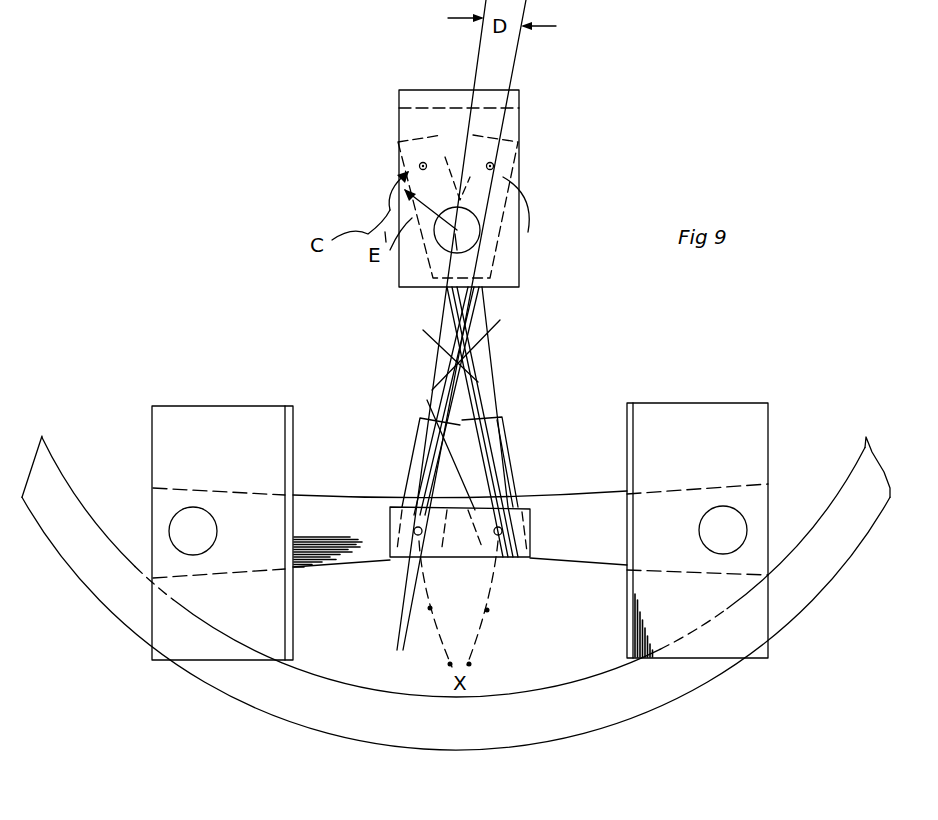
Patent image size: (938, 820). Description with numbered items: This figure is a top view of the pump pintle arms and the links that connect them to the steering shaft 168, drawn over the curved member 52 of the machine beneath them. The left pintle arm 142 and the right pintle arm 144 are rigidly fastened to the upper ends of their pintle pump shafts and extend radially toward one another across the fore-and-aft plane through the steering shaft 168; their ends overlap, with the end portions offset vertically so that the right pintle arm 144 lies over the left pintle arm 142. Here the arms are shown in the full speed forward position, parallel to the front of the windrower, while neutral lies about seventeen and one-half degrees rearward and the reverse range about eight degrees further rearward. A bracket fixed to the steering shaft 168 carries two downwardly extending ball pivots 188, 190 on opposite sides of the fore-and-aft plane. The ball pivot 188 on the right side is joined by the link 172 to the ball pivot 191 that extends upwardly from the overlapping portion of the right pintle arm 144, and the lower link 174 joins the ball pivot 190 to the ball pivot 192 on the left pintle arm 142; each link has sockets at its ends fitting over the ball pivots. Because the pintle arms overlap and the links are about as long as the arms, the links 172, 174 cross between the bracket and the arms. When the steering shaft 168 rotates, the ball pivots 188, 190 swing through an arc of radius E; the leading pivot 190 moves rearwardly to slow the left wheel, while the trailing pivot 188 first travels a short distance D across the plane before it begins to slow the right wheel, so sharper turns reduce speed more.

The arcuate track 52 is at (390, 752).
The left pintle arm 142 is at (345, 497).
The right pintle arm 144 is at (580, 496).
The steering shaft 168 is at (500, 230).
The link 172 is at (480, 308).
The lower link 174 is at (485, 380).
The ball pivot 188 is at (490, 166).
The ball pivot 190 is at (423, 166).
The ball pivot 191 is at (415, 536).
The ball pivot 192 is at (503, 534).